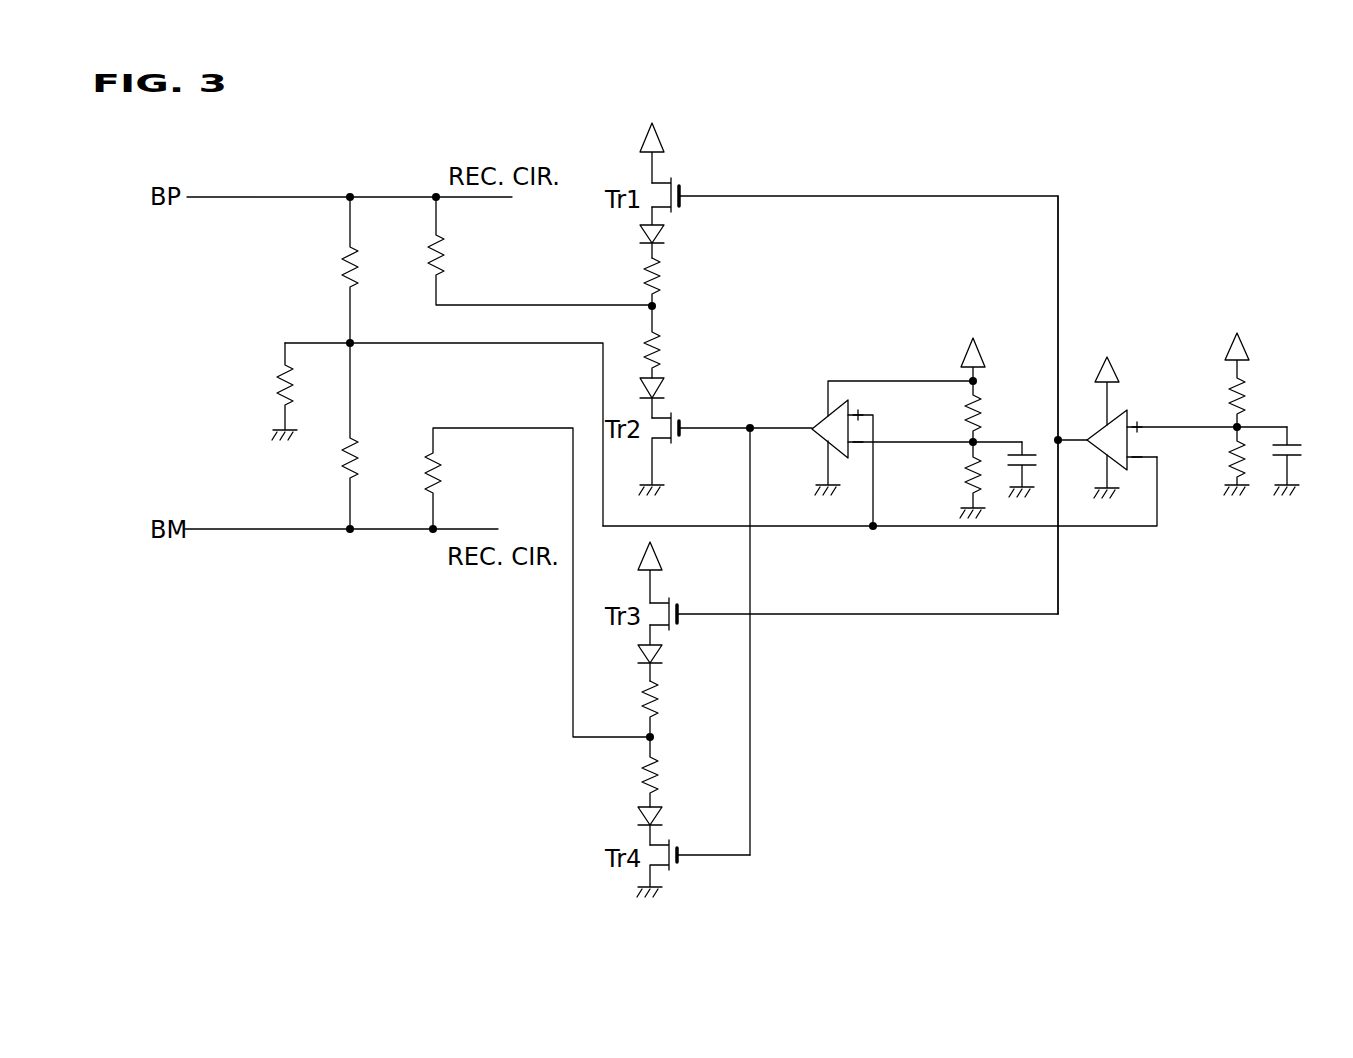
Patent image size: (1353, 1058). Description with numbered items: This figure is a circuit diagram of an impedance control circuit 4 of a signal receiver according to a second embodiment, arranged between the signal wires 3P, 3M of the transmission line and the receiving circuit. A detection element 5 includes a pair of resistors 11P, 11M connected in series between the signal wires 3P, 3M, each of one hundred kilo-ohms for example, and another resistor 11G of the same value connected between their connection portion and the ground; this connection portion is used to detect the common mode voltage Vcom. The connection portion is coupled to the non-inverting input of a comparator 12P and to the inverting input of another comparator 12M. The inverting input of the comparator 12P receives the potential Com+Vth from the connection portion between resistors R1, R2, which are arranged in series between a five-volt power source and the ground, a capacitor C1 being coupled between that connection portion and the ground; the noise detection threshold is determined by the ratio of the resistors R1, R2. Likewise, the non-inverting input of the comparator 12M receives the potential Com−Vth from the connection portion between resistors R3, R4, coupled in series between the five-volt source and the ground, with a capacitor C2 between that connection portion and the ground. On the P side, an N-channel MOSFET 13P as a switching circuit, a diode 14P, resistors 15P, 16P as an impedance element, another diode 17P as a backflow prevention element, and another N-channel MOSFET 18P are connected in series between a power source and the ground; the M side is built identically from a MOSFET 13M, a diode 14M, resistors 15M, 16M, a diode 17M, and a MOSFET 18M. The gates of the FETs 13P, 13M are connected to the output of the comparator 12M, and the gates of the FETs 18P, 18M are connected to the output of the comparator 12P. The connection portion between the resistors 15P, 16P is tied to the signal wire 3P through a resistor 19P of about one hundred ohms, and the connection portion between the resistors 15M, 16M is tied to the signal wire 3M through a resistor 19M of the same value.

The signal wire 3P is at (241, 194).
The signal wire 3M is at (218, 535).
The impedance control circuit 4 is at (1008, 174).
The detection element 5 is at (301, 321).
The resistor 11P is at (359, 256).
The resistor 11M is at (362, 446).
The resistor 11G is at (296, 380).
The resistor 19P is at (446, 256).
The resistor 19M is at (446, 475).
The comparator 12P is at (820, 415).
The comparator 12M is at (1092, 430).
The N-channel MOSFET 13P is at (687, 180).
The diode 14P is at (667, 237).
The resistor 15P is at (667, 275).
The resistor 16P is at (667, 346).
The diode 17P is at (667, 388).
The N-channel MOSFET 18P is at (677, 441).
The N-channel MOSFET 13M is at (668, 597).
The diode 14M is at (667, 657).
The resistor 15M is at (667, 701).
The resistor 16M is at (662, 769).
The diode 17M is at (662, 813).
The N-channel MOSFET 18M is at (674, 870).
The resistor R1 is at (976, 383).
The resistor R2 is at (961, 480).
The resistor R3 is at (1239, 372).
The resistor R4 is at (1223, 461).
The capacitor C1 is at (1010, 469).
The capacitor C2 is at (1306, 461).